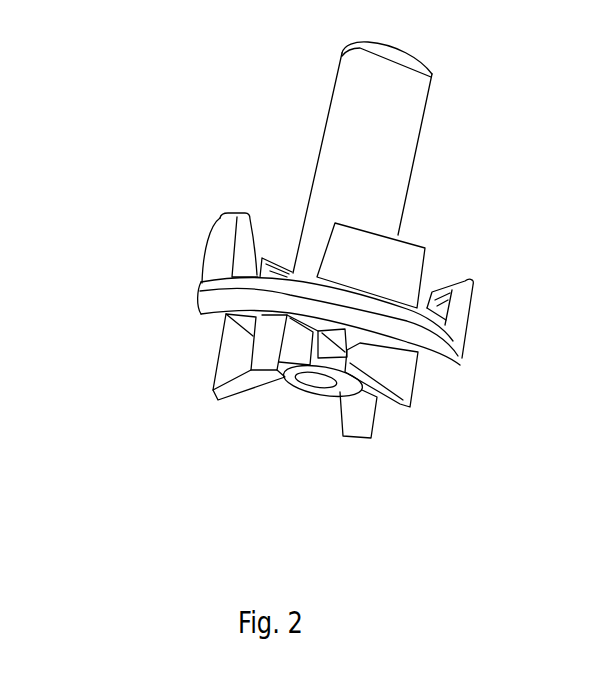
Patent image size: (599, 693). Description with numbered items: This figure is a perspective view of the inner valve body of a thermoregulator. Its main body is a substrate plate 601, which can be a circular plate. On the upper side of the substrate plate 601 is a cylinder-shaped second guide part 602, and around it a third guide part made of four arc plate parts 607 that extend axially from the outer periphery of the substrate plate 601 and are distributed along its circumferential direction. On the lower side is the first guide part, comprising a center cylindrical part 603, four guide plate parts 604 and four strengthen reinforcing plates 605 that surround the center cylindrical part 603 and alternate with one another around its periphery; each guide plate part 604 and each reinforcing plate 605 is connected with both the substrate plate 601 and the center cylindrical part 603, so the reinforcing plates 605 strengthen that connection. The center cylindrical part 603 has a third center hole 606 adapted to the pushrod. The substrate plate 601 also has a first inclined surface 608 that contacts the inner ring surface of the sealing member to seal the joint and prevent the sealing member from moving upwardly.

The substrate plate 601 is at (257, 288).
The second guide part 602 is at (367, 155).
The center cylindrical part 603 is at (287, 375).
The guide plate part 604 is at (420, 397).
The strengthen reinforcing plate 605 is at (342, 347).
The third center hole 606 is at (315, 390).
The arc plate part 607 is at (227, 245).
The first inclined surface 608 is at (440, 356).